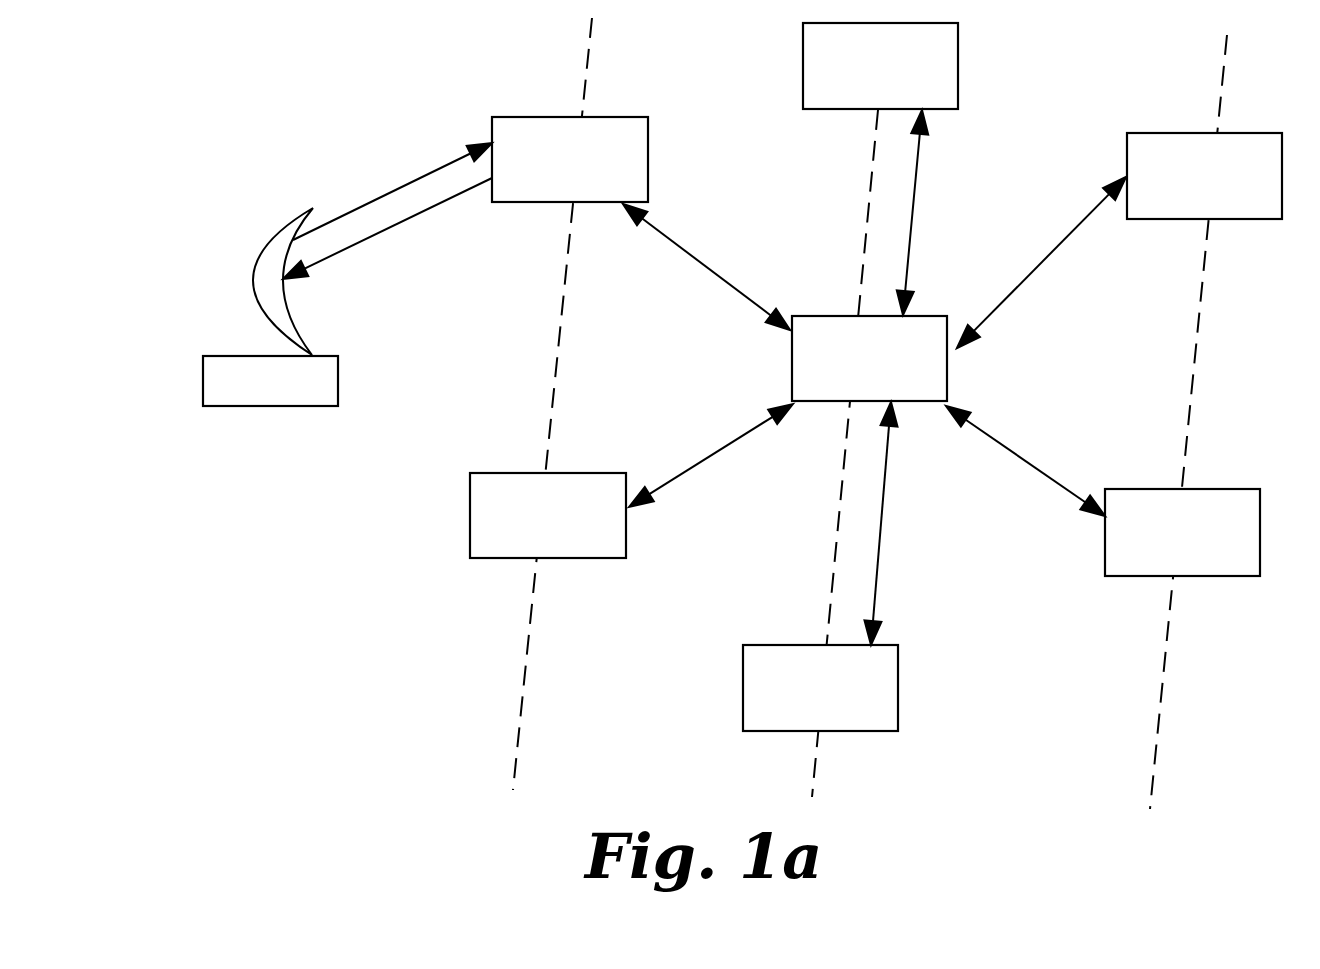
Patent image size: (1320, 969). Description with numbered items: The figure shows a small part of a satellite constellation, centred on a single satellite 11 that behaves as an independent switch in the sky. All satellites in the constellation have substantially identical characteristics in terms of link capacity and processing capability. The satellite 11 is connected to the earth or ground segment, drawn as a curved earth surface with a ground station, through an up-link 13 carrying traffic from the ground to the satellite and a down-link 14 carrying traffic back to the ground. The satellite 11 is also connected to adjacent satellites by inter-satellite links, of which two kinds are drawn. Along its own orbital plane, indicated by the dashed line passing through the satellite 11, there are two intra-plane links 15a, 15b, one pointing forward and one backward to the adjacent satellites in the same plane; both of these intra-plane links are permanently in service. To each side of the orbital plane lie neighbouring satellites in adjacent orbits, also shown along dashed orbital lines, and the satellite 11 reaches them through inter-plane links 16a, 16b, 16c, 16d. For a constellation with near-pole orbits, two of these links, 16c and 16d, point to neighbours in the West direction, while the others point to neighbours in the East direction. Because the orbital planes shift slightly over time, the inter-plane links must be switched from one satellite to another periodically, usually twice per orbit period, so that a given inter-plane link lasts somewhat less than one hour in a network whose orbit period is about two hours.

The satellite 11 is at (827, 313).
The up-link 13 is at (397, 190).
The down-link 14 is at (413, 220).
The intra-plane link 15a is at (913, 190).
The intra-plane link 15b is at (885, 517).
The inter-plane link 16a is at (1065, 242).
The inter-plane link 16b is at (1021, 458).
The inter-plane link 16c is at (690, 263).
The inter-plane link 16d is at (721, 454).